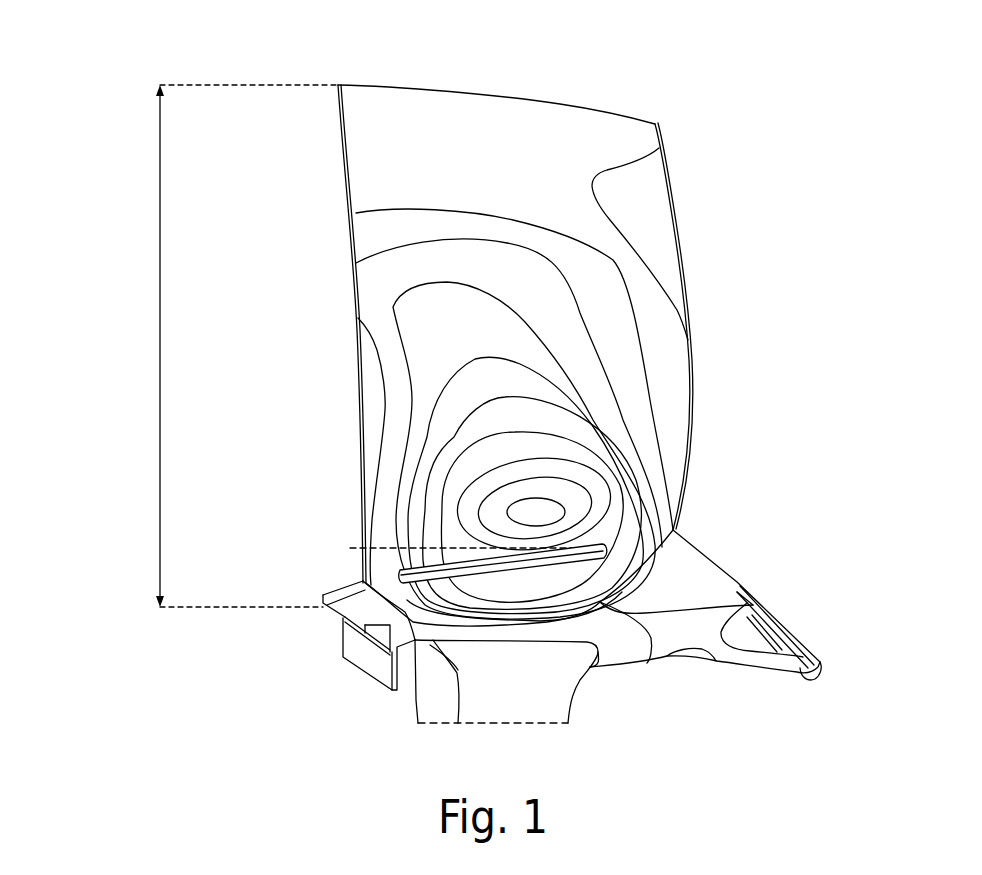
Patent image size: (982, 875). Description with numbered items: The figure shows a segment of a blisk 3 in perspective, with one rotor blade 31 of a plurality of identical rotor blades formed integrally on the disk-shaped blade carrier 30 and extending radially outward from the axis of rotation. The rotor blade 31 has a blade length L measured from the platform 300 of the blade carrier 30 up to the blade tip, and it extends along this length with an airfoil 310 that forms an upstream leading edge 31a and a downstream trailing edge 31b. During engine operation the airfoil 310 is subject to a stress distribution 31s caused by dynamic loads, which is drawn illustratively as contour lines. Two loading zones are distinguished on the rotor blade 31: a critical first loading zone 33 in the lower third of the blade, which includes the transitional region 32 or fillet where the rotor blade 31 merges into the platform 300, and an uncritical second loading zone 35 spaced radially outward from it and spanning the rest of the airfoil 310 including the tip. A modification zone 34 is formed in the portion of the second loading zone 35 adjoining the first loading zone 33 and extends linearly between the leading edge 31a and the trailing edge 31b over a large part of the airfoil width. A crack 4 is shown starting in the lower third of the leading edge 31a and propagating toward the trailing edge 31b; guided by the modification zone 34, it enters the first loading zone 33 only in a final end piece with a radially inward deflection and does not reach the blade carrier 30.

The blisk 3 is at (785, 582).
The blade carrier 30 is at (590, 695).
The platform 300 is at (708, 588).
The rotor blade 31 is at (528, 310).
The airfoil 310 is at (491, 120).
The leading edge 31a is at (355, 348).
The trailing edge 31b is at (690, 360).
The stress distribution 31s is at (493, 511).
The transitional region 32 is at (673, 533).
The first loading zone 33 is at (343, 656).
The modification zone 34 is at (345, 618).
The second loading zone 35 is at (618, 330).
The crack 4 is at (355, 548).
The blade length L is at (160, 325).